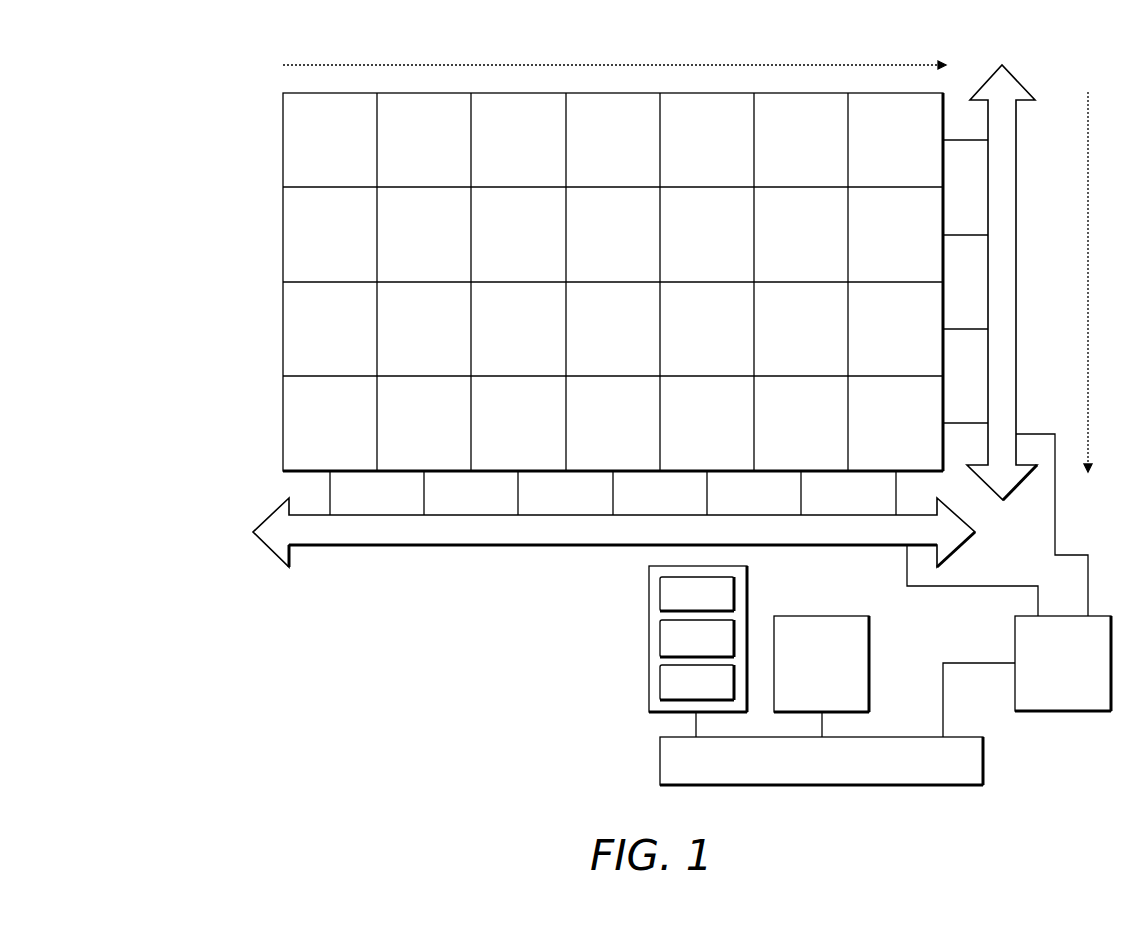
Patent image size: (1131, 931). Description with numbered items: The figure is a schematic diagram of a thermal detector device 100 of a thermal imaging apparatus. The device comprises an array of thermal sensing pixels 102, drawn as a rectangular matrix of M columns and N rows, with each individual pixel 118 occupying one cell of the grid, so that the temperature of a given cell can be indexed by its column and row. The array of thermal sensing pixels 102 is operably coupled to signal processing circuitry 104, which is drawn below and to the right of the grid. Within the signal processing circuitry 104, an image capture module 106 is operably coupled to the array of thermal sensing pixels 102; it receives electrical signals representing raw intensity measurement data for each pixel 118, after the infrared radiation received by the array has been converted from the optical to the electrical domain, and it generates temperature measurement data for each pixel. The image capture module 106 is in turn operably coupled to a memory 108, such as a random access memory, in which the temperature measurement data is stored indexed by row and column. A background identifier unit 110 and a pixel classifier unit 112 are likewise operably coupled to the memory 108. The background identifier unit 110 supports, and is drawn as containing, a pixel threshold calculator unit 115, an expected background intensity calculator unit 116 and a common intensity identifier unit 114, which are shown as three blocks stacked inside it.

The thermal detector device 100 is at (253, 96).
The array of thermal sensing pixels 102 is at (283, 326).
The signal processing circuitry 104 is at (1052, 762).
The image capture module 106 is at (1063, 663).
The memory 108 is at (821, 761).
The background identifier unit 110 is at (748, 576).
The pixel classifier unit 112 is at (821, 664).
The common intensity identifier unit 114 is at (660, 678).
The pixel threshold calculator unit 115 is at (660, 588).
The expected background intensity calculator unit 116 is at (660, 633).
The pixel 118 is at (922, 114).